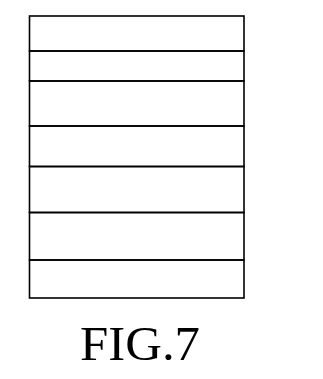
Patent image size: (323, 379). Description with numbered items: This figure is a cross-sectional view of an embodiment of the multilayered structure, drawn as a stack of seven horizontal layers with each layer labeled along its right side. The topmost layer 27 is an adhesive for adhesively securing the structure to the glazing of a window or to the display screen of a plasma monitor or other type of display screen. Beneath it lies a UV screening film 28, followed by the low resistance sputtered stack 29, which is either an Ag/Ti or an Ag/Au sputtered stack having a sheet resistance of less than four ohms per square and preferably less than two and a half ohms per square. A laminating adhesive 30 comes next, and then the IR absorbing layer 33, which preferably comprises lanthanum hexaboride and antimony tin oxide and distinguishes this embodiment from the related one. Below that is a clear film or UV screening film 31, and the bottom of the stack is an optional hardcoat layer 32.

The adhesive layer 27 is at (231, 42).
The UV screening film 28 is at (231, 72).
The low resistance sputtered stack 29 is at (231, 117).
The laminating adhesive 30 is at (231, 162).
The IR absorbing layer 33 is at (231, 197).
The clear film or UV screening film 31 is at (231, 240).
The hardcoat layer 32 is at (230, 283).